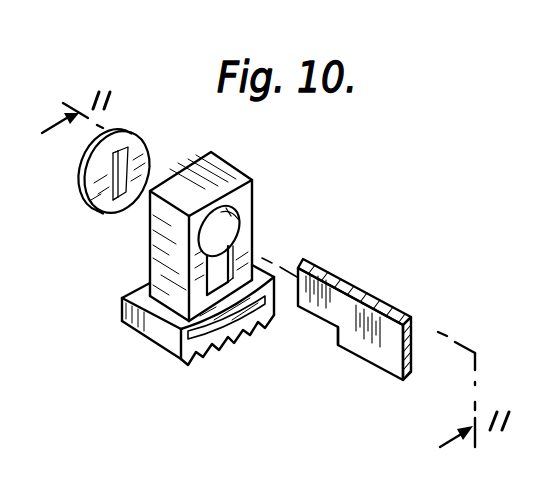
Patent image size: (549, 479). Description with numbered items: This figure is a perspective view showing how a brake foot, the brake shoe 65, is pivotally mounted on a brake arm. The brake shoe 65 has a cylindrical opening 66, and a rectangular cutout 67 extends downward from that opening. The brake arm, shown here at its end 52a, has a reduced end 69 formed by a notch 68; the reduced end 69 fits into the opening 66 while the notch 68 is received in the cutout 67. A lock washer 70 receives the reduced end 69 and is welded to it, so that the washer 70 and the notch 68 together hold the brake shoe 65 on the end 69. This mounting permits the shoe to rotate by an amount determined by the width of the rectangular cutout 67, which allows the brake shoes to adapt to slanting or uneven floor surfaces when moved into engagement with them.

The lock washer 70 is at (135, 139).
The brake shoe 65 is at (262, 225).
The cylindrical opening 66 is at (234, 216).
The rectangular cutout 67 is at (207, 225).
The end of arm 52 52a is at (390, 333).
The reduced end 69 is at (312, 271).
The notch 68 is at (338, 340).